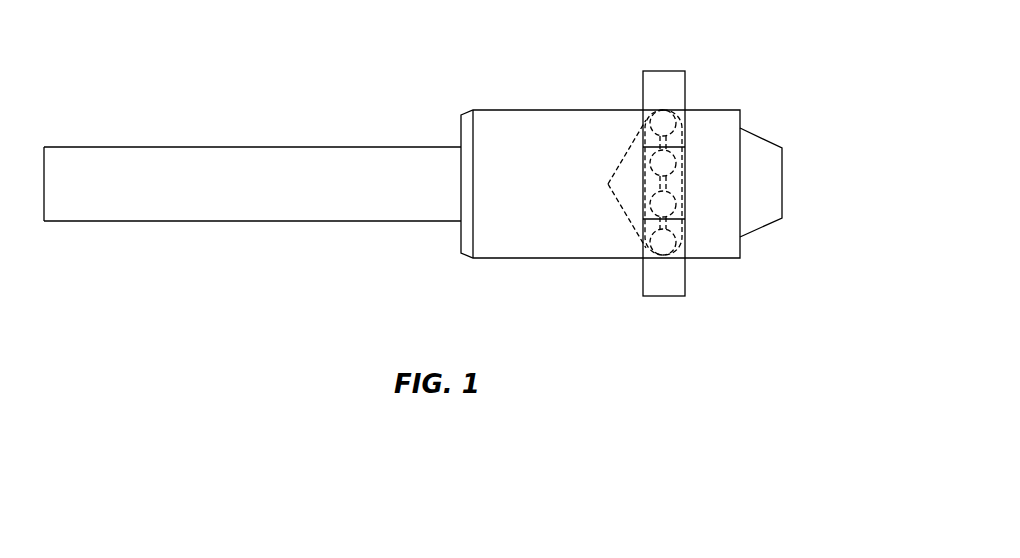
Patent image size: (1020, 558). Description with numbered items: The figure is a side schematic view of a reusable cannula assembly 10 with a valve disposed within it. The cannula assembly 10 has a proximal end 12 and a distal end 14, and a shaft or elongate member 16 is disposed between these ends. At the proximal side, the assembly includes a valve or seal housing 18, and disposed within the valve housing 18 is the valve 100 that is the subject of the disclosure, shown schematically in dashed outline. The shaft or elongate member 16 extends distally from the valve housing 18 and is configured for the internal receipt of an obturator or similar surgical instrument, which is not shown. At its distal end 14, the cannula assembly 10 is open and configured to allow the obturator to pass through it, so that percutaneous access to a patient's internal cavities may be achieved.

The cannula assembly 10 is at (446, 50).
The proximal end 12 is at (760, 62).
The distal end 14 is at (148, 94).
The shaft or elongate member 16 is at (205, 223).
The valve or seal housing 18 is at (670, 297).
The valve 100 is at (628, 241).